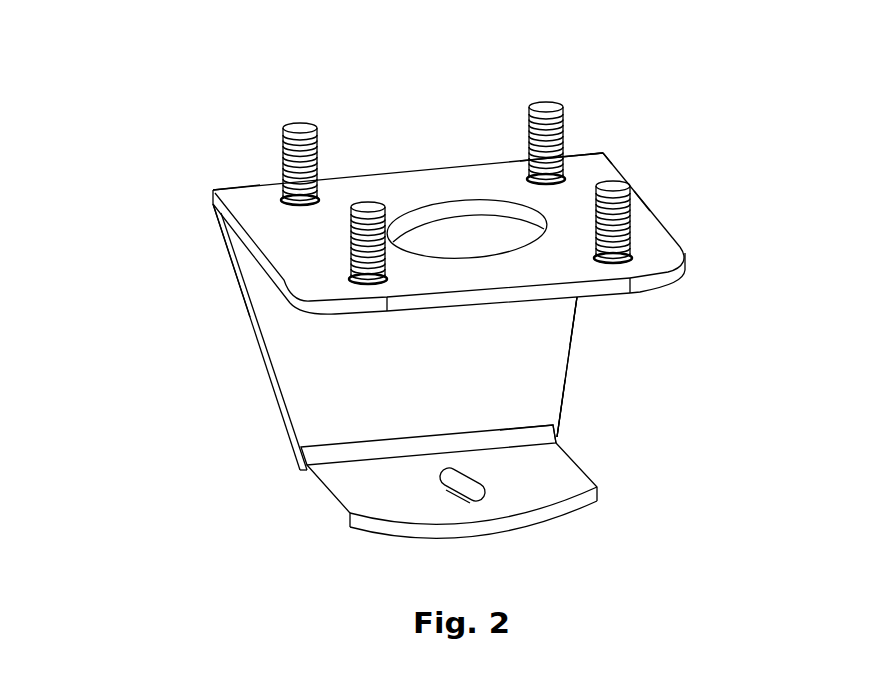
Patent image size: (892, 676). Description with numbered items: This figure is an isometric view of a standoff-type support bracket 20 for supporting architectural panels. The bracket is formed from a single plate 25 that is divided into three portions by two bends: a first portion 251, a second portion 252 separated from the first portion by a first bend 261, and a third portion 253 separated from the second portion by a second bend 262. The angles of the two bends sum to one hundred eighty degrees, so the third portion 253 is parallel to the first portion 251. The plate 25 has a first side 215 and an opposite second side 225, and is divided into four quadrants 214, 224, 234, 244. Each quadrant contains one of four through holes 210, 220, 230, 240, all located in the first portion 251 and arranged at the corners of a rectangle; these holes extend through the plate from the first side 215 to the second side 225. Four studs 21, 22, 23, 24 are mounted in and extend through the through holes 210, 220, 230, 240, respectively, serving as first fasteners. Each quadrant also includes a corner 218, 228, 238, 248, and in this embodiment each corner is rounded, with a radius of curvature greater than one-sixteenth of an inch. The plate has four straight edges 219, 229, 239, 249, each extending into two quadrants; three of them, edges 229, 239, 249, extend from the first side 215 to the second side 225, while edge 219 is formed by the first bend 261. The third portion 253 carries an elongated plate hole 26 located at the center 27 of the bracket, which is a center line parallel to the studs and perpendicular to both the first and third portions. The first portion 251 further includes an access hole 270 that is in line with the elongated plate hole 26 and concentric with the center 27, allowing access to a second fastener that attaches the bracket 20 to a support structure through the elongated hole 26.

The support bracket 20 is at (192, 292).
The stud 21 is at (192, 110).
The stud 22 is at (603, 99).
The stud 23 is at (226, 279).
The stud 24 is at (701, 222).
The plate 25 is at (682, 388).
The elongated plate hole 26 is at (331, 507).
The center 27 is at (275, 507).
The through hole 210 is at (188, 130).
The quadrant 214 is at (158, 144).
The first side 215 is at (470, 158).
The corner 218 is at (183, 223).
The edge 219 is at (408, 102).
The through hole 220 is at (703, 87).
The quadrant 224 is at (668, 136).
The second side 225 is at (723, 326).
The corner 228 is at (688, 109).
The edge 229 is at (173, 246).
The through hole 230 is at (222, 370).
The quadrant 234 is at (222, 339).
The corner 238 is at (343, 397).
The edge 239 is at (690, 368).
The through hole 240 is at (723, 301).
The quadrant 244 is at (723, 267).
The corner 248 is at (705, 308).
The edge 249 is at (725, 193).
The first portion 251 is at (710, 192).
The second portion 252 is at (687, 450).
The third portion 253 is at (686, 525).
The first bend 261 is at (153, 251).
The second bend 262 is at (658, 492).
The access hole 270 is at (485, 139).